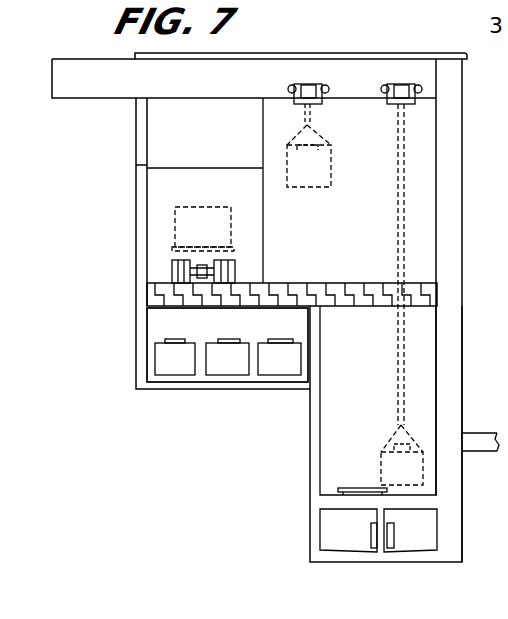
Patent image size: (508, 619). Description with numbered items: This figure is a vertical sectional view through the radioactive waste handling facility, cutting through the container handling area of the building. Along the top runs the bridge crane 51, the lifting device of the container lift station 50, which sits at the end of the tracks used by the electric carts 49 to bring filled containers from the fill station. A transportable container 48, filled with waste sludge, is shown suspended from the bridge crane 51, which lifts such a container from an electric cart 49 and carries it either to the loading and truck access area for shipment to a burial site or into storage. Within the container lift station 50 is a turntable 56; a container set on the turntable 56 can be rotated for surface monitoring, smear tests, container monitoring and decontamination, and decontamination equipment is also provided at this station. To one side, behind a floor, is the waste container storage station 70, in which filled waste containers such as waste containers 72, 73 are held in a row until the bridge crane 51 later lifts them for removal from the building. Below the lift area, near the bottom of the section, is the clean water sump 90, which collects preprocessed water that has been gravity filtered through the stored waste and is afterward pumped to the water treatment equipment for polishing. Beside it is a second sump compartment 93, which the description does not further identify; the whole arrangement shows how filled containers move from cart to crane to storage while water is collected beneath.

The transportable container 48 is at (322, 183).
The electric cart 49 is at (420, 474).
The container lift station 50 is at (432, 346).
The bridge crane 51 is at (390, 104).
The turntable 56 is at (353, 488).
The waste container storage station 70 is at (148, 360).
The waste container 72 is at (226, 368).
The waste container 73 is at (176, 368).
The clean water sump 90 is at (360, 543).
The door 93 is at (432, 530).